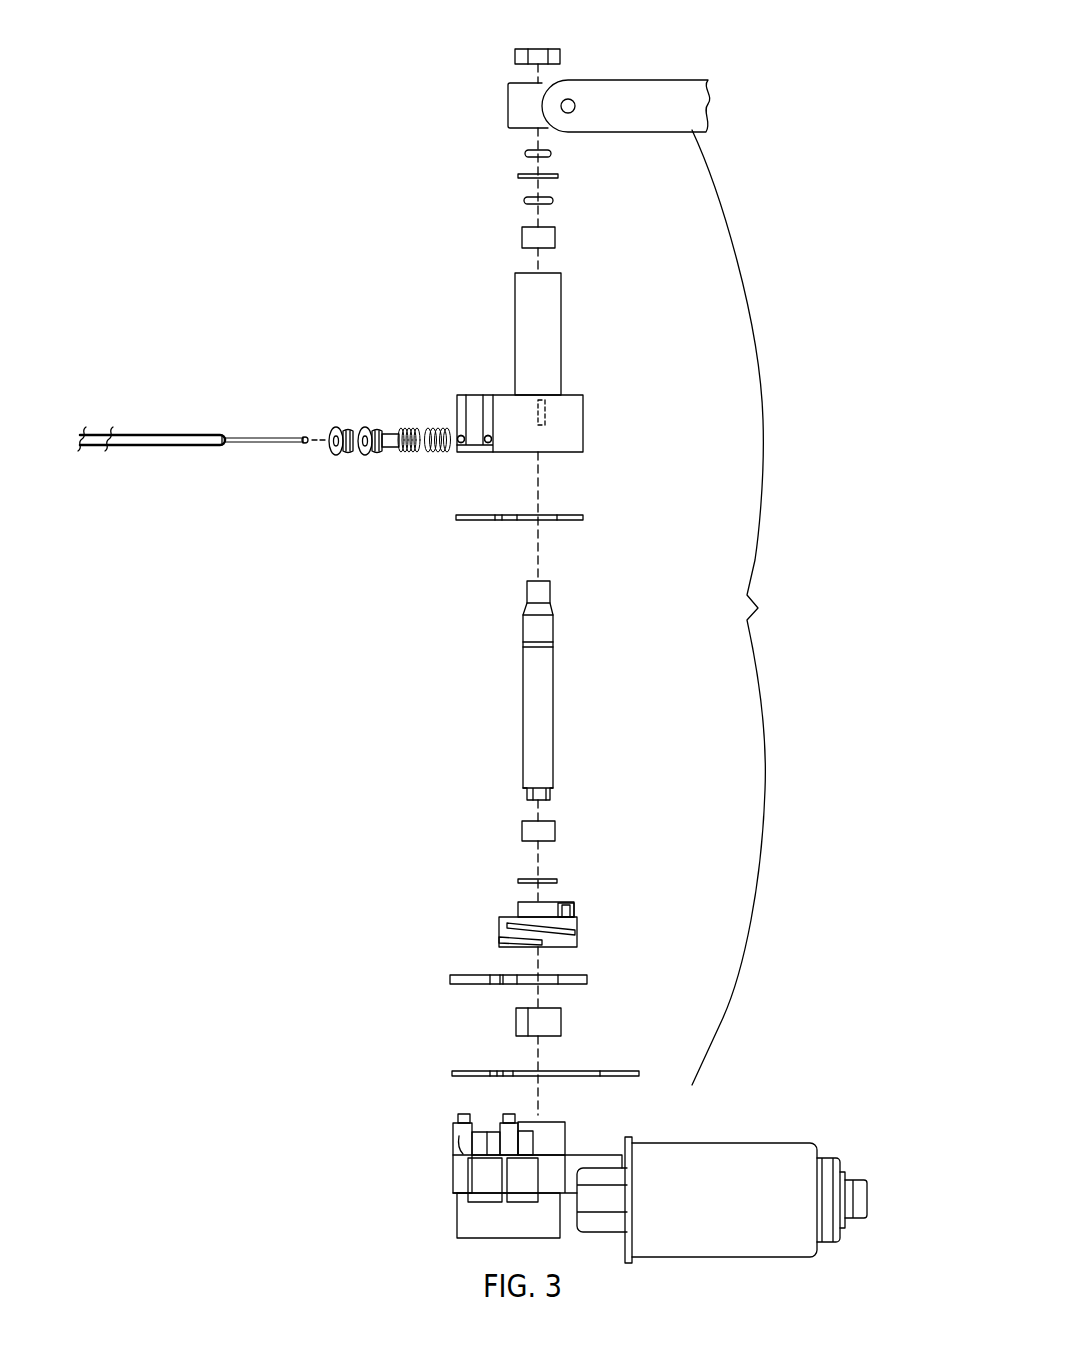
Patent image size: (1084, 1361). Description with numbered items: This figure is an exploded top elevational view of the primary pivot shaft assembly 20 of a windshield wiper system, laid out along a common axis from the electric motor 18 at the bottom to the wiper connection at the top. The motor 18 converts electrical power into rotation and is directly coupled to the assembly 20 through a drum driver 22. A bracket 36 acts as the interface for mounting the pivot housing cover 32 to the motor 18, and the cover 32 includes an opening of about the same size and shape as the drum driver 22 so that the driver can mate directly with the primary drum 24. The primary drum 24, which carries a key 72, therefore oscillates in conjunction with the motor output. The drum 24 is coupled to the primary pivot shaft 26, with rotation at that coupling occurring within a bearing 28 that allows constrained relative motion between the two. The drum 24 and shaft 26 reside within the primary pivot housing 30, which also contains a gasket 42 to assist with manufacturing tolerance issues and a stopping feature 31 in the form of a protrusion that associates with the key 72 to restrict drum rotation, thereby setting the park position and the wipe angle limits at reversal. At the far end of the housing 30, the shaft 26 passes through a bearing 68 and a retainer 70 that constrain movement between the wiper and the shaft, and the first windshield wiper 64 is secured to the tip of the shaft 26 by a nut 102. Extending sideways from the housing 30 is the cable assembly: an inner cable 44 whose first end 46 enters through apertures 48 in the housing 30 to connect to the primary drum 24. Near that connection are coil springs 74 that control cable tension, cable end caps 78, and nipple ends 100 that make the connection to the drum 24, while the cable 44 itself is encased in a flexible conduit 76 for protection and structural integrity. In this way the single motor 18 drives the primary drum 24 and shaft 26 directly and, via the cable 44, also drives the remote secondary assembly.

The electric motor 18 is at (787, 1157).
The primary pivot shaft assembly 20 is at (736, 607).
The drum driver 22 is at (562, 1023).
The primary drum 24 is at (502, 918).
The primary pivot shaft 26 is at (532, 672).
The bearing 28 is at (528, 832).
The primary pivot housing 30 is at (548, 313).
The stopping feature 31 is at (548, 407).
The pivot housing cover 32 is at (467, 973).
The bracket 36 is at (628, 1068).
The gasket 42 is at (583, 518).
The cable 44 is at (253, 443).
The first end 46 is at (223, 433).
The apertures 48 is at (488, 443).
The first windshield wiper 64 is at (508, 100).
The bearing 68 is at (522, 235).
The retainer 70 is at (565, 145).
The key 72 is at (565, 903).
The coil springs 74 is at (437, 432).
The flexible conduit 76 is at (142, 438).
The cable end caps 78 is at (335, 435).
The nipple ends 100 is at (305, 435).
The nut 102 is at (562, 54).